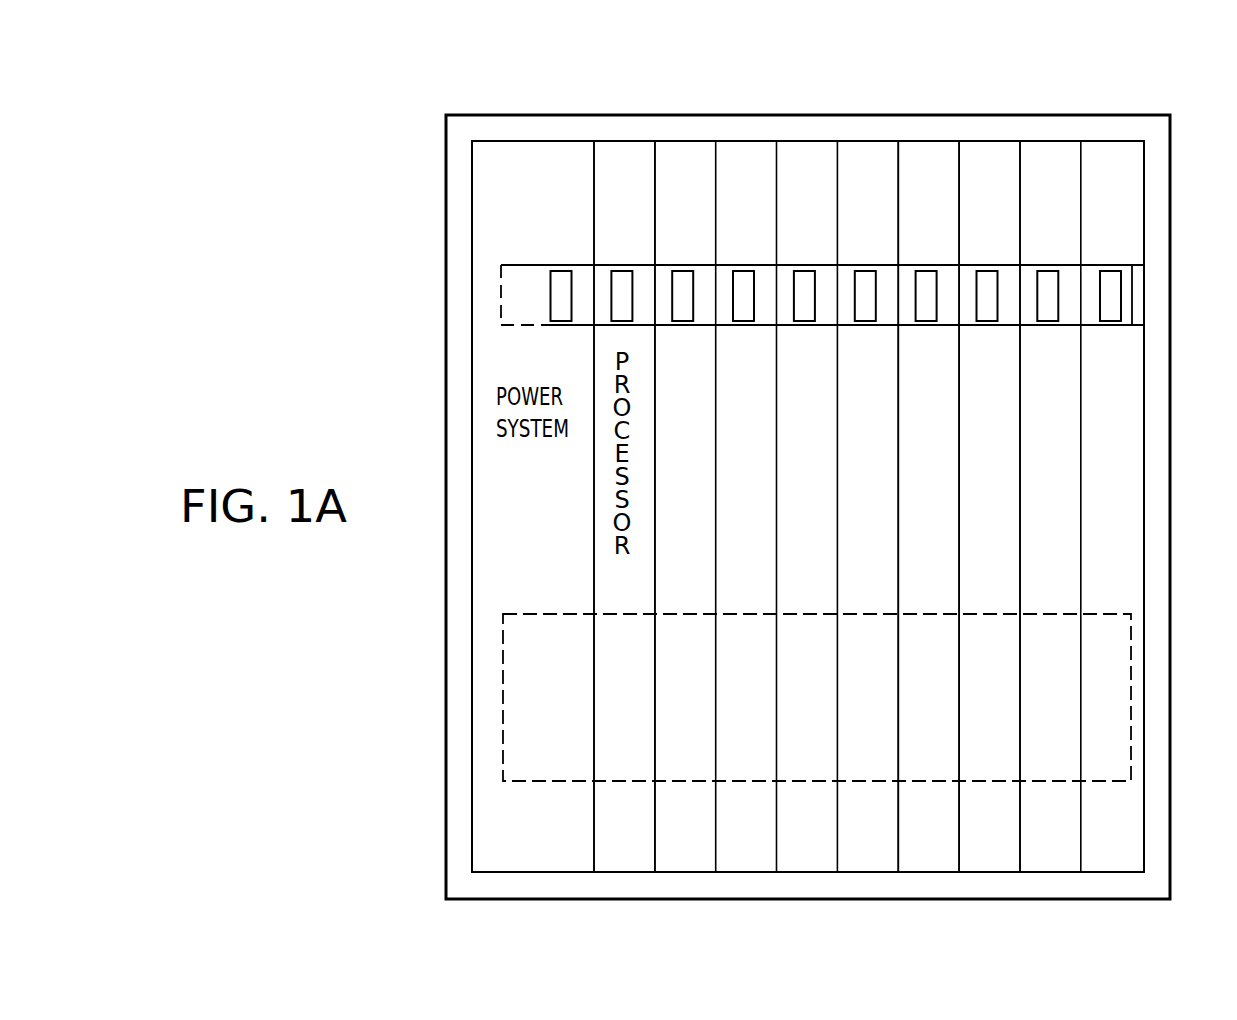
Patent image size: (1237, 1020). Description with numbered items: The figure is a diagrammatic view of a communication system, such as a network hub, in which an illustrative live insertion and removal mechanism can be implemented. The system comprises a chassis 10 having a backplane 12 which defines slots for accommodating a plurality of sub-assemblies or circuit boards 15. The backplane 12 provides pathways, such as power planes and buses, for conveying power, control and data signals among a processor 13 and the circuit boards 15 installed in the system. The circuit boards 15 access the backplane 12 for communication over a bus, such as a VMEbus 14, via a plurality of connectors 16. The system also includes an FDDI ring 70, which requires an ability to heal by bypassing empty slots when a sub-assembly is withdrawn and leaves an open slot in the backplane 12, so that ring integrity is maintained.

The chassis 10 is at (1077, 110).
The backplane 12 is at (747, 170).
The processor 13 is at (627, 853).
The VMEbus 14 is at (1100, 263).
The circuit boards 15 is at (997, 853).
The connectors 16 is at (1050, 327).
The FDDI ring 70 is at (503, 695).